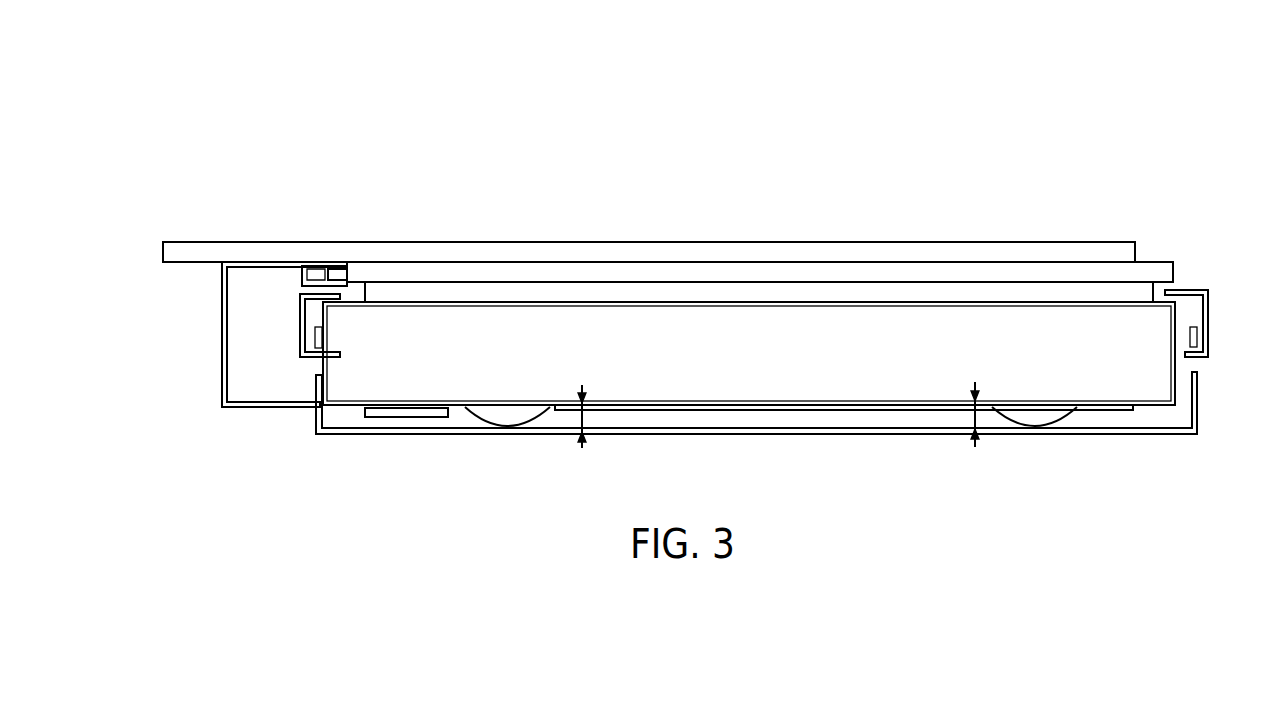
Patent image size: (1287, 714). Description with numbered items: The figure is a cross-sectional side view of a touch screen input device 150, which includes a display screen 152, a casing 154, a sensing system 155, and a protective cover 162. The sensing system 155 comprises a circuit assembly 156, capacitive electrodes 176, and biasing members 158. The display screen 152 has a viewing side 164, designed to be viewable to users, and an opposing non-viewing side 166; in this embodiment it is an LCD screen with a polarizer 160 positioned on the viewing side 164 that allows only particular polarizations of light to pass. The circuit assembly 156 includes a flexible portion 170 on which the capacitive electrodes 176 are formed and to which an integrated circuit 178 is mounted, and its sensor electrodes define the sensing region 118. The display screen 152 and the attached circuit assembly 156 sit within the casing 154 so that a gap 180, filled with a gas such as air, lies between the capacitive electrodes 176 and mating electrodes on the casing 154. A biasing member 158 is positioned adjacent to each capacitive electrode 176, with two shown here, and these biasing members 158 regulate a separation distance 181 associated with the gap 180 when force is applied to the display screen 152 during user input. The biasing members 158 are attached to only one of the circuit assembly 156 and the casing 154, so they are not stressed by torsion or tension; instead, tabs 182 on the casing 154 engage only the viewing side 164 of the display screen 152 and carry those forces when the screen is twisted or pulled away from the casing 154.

The touch screen input device 150 is at (310, 127).
The sensing region 118 is at (1052, 232).
The protective cover 162 is at (163, 251).
The polarizer 160 is at (357, 291).
The viewing side 164 is at (1162, 300).
The circuit assembly 156 is at (221, 340).
The tabs 182 is at (300, 312).
The display screen 152 is at (1175, 360).
The integrated circuit 178 is at (392, 418).
The non-viewing side 166 is at (1140, 410).
The biasing members 158 is at (513, 418).
The capacitive electrodes 176 is at (470, 414).
The casing 154 is at (1180, 436).
The gap 180 is at (806, 414).
The separation distance 181 is at (584, 405).
The flexible portion 170 is at (226, 408).
The sensing system 155 is at (261, 438).